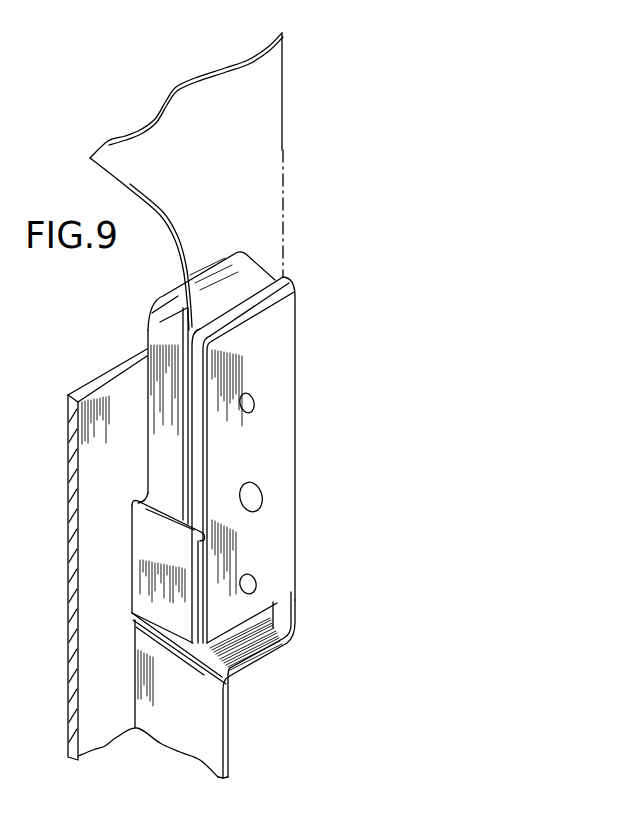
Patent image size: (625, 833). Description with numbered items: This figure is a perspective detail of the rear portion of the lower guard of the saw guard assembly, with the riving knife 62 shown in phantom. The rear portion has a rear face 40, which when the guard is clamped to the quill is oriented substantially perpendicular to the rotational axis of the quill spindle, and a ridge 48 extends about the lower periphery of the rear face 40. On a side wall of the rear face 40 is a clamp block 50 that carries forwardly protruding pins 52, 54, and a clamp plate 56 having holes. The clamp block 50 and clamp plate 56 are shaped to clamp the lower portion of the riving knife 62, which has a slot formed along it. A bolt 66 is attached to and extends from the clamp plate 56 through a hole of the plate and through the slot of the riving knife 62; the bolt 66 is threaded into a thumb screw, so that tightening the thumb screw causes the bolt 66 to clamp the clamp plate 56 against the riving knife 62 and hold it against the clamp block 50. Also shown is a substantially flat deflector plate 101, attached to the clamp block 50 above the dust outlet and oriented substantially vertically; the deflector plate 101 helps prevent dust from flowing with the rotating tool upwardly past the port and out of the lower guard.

The rear face 40 is at (131, 472).
The ridge 48 is at (203, 730).
The clamp block 50 is at (157, 332).
The pin 52 is at (256, 403).
The pin 54 is at (257, 581).
The clamp plate 56 is at (288, 313).
The riving knife 62 is at (270, 183).
The bolt 66 is at (250, 494).
The deflector plate 101 is at (155, 540).